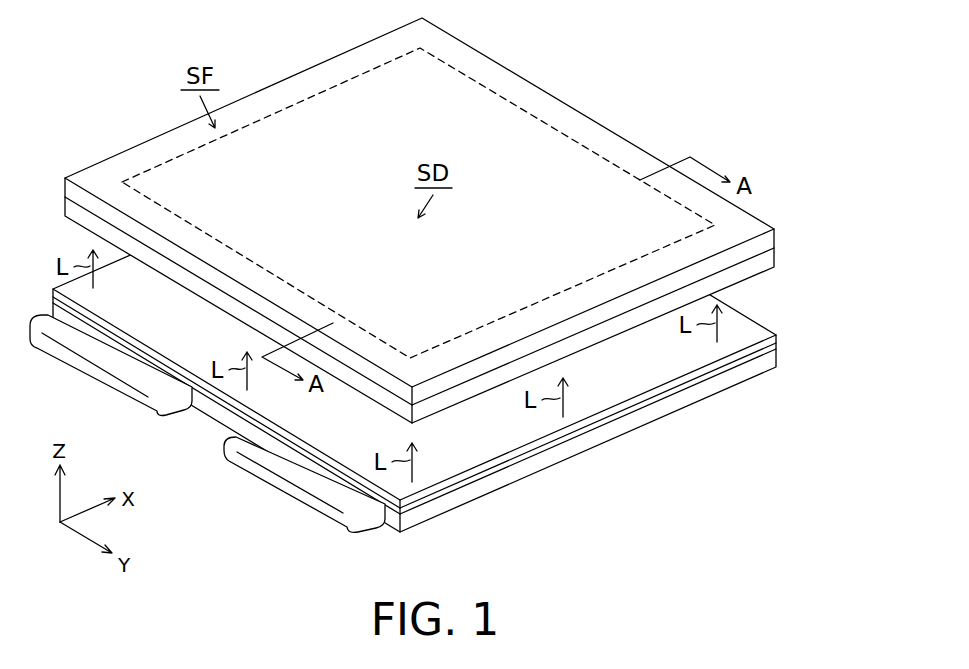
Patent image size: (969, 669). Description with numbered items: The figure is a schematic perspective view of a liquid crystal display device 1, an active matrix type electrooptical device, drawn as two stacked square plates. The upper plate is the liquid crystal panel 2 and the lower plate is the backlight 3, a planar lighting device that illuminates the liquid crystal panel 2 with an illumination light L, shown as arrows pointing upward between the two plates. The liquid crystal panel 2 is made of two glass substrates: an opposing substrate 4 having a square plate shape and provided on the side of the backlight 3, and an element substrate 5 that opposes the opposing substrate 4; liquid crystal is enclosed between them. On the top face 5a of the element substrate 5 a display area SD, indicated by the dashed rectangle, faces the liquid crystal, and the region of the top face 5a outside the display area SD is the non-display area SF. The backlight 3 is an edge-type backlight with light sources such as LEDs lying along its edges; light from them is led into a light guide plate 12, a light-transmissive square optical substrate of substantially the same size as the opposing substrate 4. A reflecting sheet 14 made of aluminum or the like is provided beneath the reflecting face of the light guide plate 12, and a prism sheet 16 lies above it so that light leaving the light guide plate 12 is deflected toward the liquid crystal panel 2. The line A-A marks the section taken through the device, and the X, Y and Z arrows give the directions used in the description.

The liquid crystal display device 1 is at (633, 65).
The liquid crystal panel 2 is at (458, 220).
The backlight 3 is at (460, 328).
The opposing substrate 4 is at (820, 220).
The element substrate 5 is at (437, 211).
The top face 5a is at (137, 158).
The light guide plate 12 is at (777, 350).
The reflecting sheet 14 is at (835, 325).
The prism sheet 16 is at (777, 337).